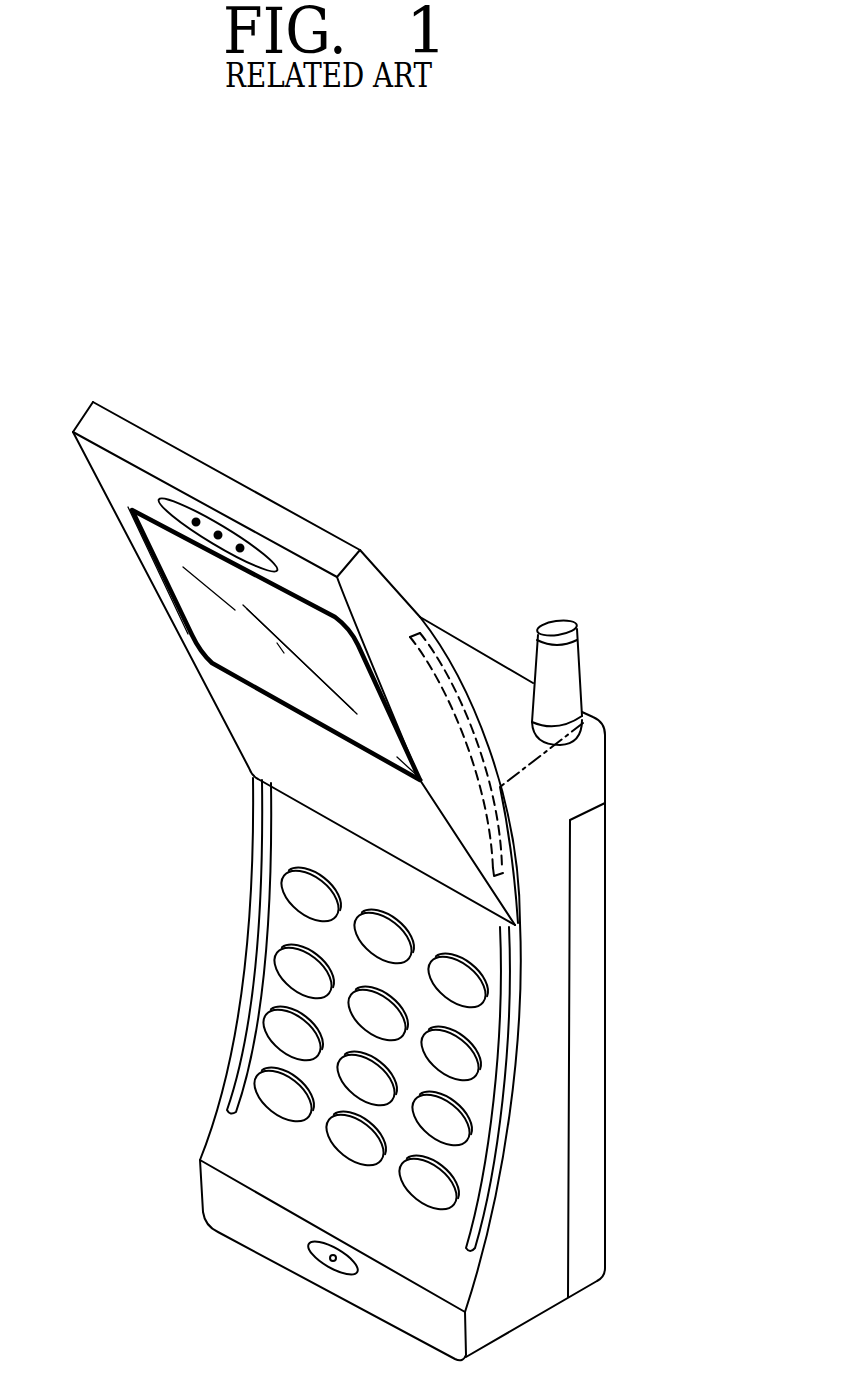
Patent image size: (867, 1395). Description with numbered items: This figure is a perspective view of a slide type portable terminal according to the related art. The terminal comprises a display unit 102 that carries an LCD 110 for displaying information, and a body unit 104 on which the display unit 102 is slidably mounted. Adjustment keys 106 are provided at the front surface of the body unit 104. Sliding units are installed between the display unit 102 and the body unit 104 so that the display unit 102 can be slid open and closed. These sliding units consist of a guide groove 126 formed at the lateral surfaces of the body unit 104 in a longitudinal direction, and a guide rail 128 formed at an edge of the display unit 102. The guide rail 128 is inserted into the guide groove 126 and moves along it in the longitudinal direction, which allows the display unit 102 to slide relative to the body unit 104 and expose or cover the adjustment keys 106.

The display unit 102 is at (237, 718).
The body unit 104 is at (553, 1033).
The adjustment keys 106 is at (268, 1087).
The LCD 110 is at (185, 597).
The guide groove 126 is at (263, 943).
The guide rail 128 is at (447, 687).